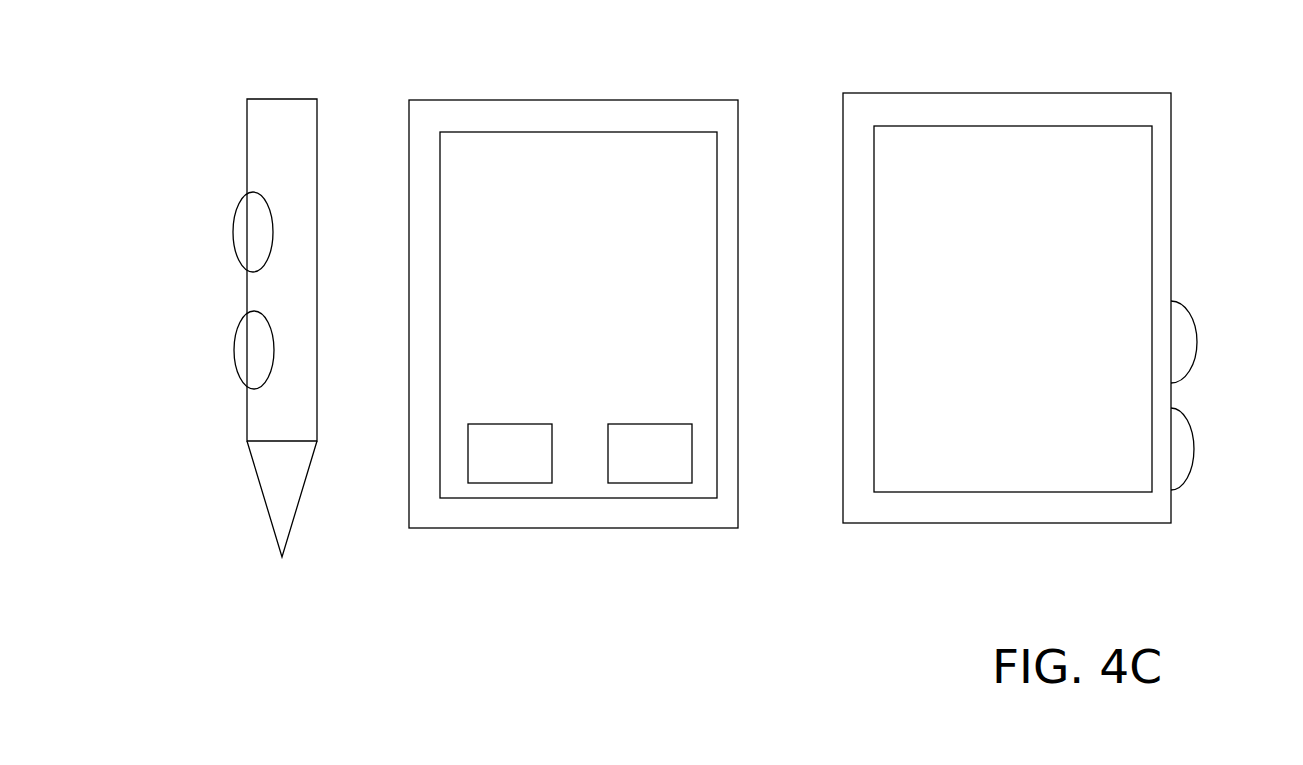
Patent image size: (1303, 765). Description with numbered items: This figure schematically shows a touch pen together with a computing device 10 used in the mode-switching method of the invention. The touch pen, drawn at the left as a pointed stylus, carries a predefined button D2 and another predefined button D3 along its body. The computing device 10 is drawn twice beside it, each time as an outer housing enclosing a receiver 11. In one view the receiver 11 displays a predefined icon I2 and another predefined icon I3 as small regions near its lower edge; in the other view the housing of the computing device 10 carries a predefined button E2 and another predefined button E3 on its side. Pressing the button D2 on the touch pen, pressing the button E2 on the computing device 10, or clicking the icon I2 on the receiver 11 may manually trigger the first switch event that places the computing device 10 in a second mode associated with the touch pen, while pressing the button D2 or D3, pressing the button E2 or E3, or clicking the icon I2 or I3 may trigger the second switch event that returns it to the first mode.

The computing device 10 is at (721, 70).
The receiver 11 is at (796, 312).
The predefined button D2 is at (210, 329).
The another predefined button D3 is at (210, 224).
The predefined button E2 is at (1208, 434).
The another predefined button E3 is at (1208, 309).
The predefined icon I2 is at (670, 467).
The another predefined icon I3 is at (518, 466).